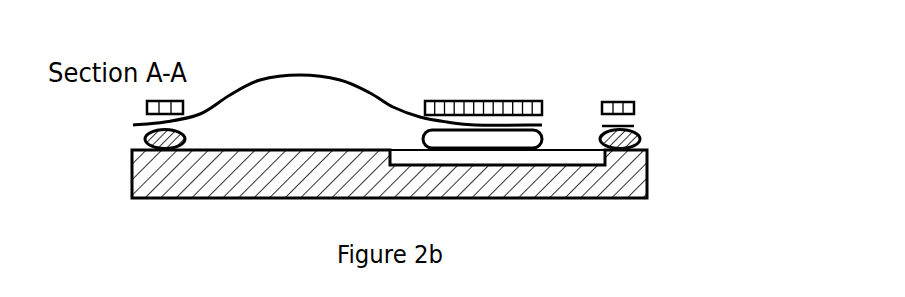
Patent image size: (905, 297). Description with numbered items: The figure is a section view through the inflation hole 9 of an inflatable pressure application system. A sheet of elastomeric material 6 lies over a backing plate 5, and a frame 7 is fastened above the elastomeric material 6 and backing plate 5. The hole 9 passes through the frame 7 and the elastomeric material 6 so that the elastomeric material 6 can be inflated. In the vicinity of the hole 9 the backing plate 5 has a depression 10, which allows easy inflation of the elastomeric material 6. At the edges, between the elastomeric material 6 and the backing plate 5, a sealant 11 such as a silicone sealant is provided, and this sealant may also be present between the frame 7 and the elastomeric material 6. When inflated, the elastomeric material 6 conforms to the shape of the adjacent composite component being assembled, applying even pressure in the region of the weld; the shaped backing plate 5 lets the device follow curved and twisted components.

The backing plate 5 is at (622, 198).
The elastomeric material 6 is at (335, 78).
The frame 7 is at (634, 108).
The hole 9 is at (570, 115).
The depression 10 is at (497, 157).
The sealant 11 is at (640, 137).